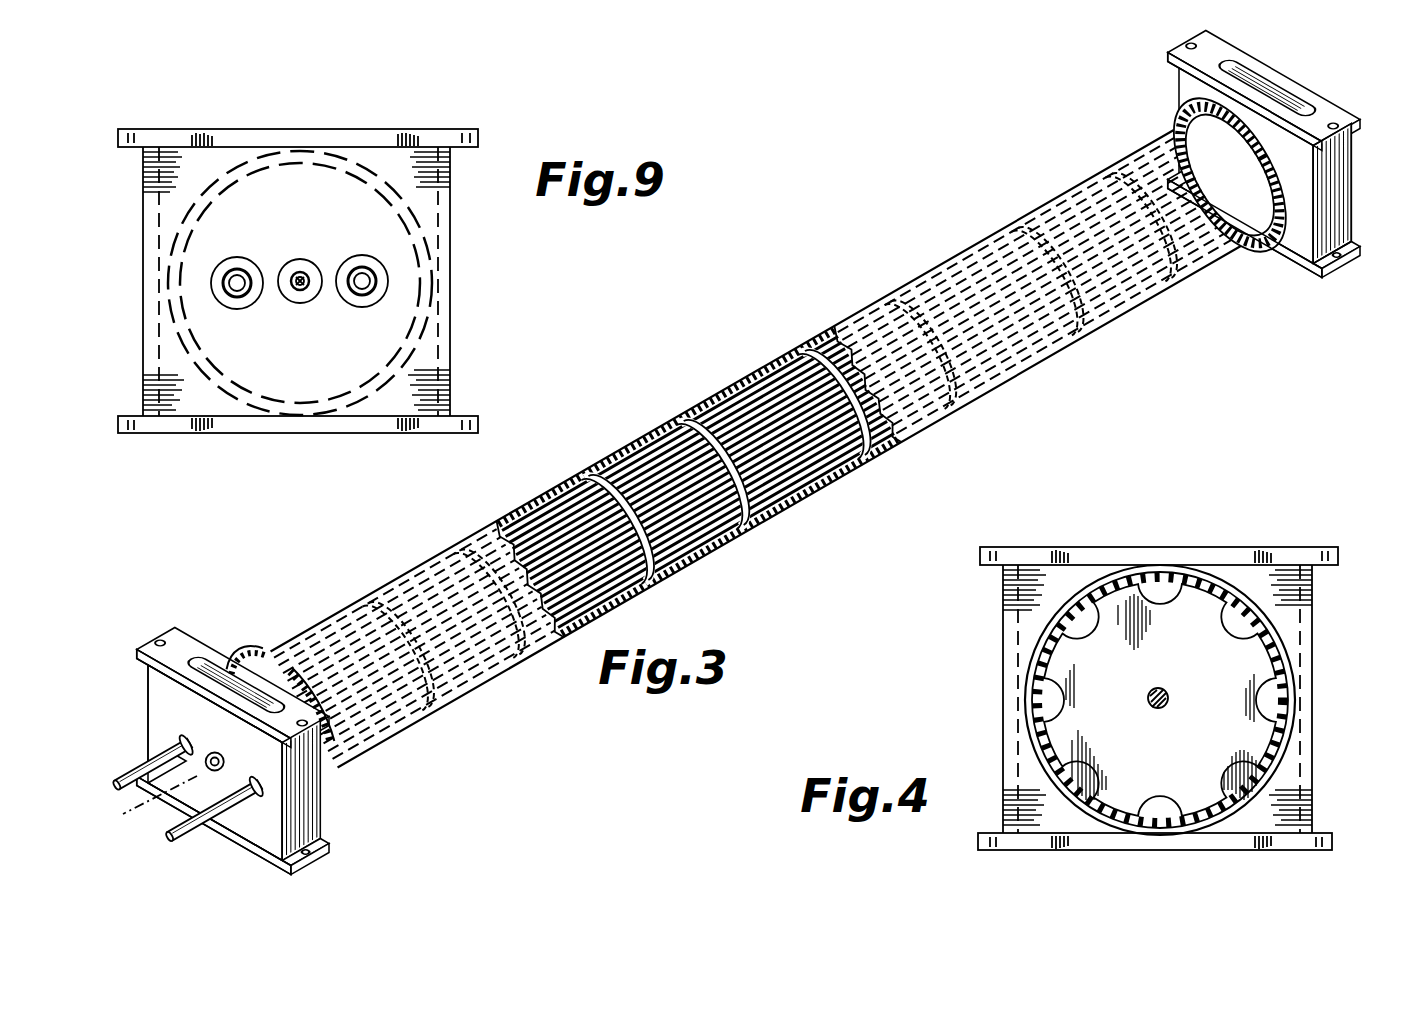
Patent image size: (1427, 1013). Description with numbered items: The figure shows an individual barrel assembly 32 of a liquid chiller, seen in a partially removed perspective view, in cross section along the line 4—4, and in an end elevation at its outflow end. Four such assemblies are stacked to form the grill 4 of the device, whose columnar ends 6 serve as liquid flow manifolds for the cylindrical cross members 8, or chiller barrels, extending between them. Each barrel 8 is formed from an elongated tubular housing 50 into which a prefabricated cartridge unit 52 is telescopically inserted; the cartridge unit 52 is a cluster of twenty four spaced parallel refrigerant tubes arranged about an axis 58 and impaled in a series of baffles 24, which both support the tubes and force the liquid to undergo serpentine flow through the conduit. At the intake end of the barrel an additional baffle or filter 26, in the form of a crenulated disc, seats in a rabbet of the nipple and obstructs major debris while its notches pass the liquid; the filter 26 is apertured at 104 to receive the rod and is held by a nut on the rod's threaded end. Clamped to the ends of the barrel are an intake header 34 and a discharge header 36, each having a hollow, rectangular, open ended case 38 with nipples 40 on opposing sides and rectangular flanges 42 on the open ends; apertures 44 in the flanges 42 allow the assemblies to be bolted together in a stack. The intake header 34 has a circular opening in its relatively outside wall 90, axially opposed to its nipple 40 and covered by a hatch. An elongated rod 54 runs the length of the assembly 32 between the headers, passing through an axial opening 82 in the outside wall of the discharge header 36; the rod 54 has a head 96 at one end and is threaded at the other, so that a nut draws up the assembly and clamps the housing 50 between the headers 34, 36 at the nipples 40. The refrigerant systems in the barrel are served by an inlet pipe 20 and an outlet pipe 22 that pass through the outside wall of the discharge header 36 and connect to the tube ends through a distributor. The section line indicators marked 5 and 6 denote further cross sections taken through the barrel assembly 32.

In FIG. 3, the grill 4 is at (1150, 108).
In FIG. 3, the section line 5- 5 is at (920, 247).
In FIG. 3, the columnar ends 6 is at (1025, 192).
In FIG. 3, the cross members 8 is at (774, 348).
In FIG. 9, the inlet pipe 20 is at (237, 257).
In FIG. 3, the inlet pipe 20 is at (124, 774).
In FIG. 9, the outlet pipe 22 is at (362, 255).
In FIG. 3, the outlet pipe 22 is at (210, 832).
In FIG. 3, the baffles 24 is at (445, 718).
In FIG. 4, the filter 26 is at (1200, 665).
In FIG. 3, the barrel assembly 32 is at (810, 293).
In FIG. 3, the intake header 34 is at (1345, 186).
In FIG. 4, the intake header 34 is at (1177, 682).
In FIG. 9, the discharge header 36 is at (213, 128).
In FIG. 3, the discharge header 36 is at (140, 698).
In FIG. 9, the case 38 is at (425, 200).
In FIG. 3, the case 38 is at (300, 815).
In FIG. 4, the case 38 is at (1280, 603).
In FIG. 3, the nipple 40 is at (1182, 98).
In FIG. 4, the nipple 40 is at (1290, 753).
In FIG. 3, the flange 42 is at (343, 757).
In FIG. 4, the flange 42 is at (1055, 548).
In FIG. 3, the apertures 44 is at (157, 642).
In FIG. 4, the apertures 44 is at (1320, 850).
In FIG. 9, the tubular housing 50 is at (330, 155).
In FIG. 3, the tubular housing 50 is at (528, 504).
In FIG. 3, the cartridge unit 52 is at (770, 496).
In FIG. 4, the rod 54 is at (1166, 685).
In FIG. 9, the axis 58 is at (294, 292).
In FIG. 3, the axis 58 is at (114, 822).
In FIG. 9, the axial opening 82 is at (304, 291).
In FIG. 3, the outside wall 90 is at (1268, 88).
In FIG. 9, the head 96 is at (300, 259).
In FIG. 3, the head 96 is at (216, 752).
In FIG. 4, the aperture 104 is at (1160, 710).